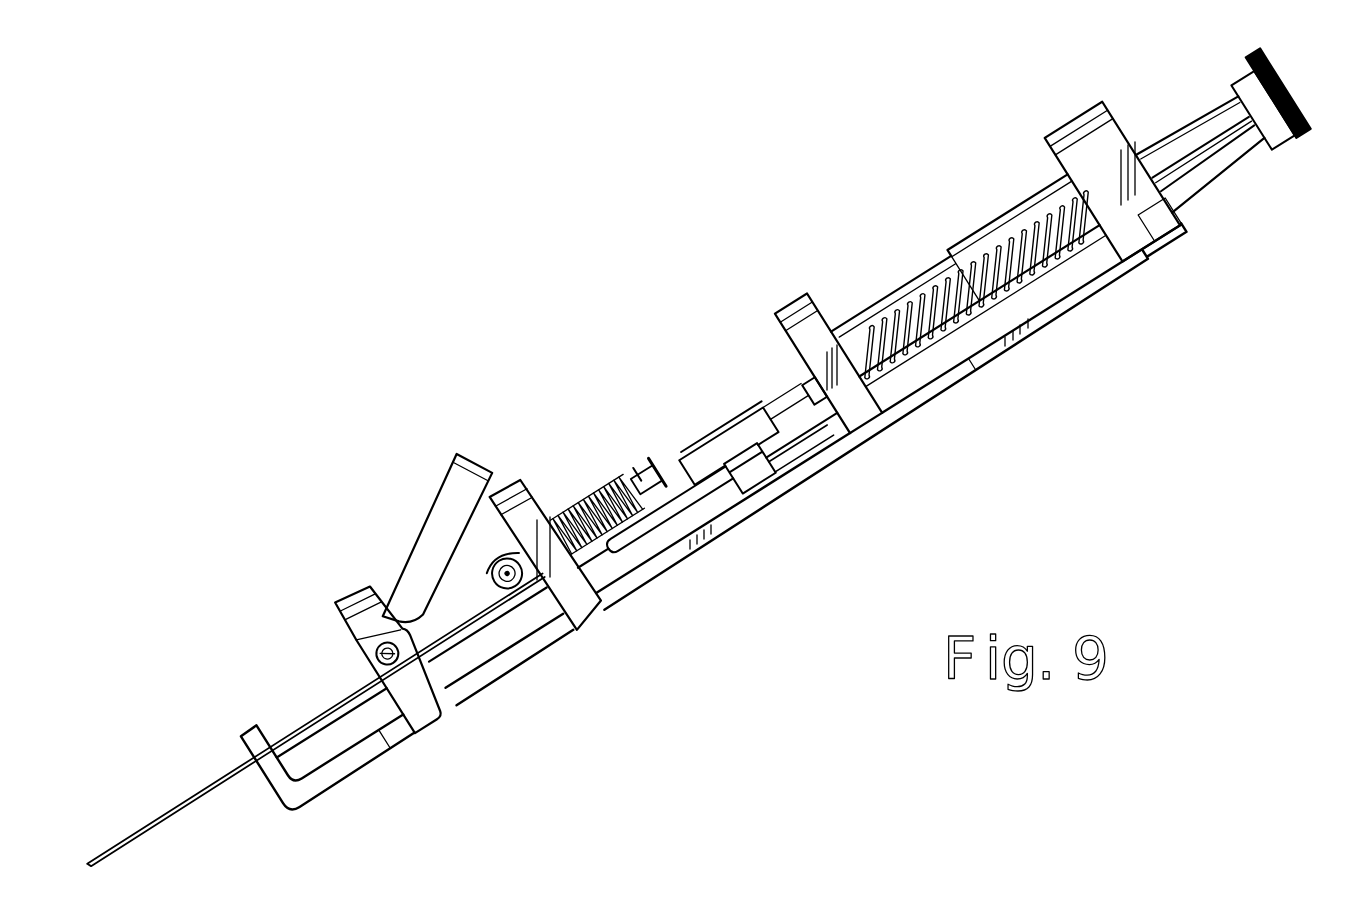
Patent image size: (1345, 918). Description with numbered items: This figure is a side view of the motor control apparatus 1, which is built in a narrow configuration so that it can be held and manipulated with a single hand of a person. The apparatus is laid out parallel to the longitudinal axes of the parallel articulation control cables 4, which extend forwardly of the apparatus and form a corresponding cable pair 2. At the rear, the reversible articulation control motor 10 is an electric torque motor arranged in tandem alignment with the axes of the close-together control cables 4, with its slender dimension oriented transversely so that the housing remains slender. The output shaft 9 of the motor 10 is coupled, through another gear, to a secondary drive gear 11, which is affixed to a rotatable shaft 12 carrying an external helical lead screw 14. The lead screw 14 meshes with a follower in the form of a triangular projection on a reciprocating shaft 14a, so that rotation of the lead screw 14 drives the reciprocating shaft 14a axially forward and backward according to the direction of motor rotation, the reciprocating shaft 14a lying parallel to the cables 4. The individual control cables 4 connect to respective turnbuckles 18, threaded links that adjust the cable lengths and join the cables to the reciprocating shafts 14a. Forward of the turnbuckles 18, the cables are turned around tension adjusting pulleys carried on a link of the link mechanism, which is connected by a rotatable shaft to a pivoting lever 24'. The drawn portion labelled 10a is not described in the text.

The motor control apparatus 1 is at (620, 440).
The cable pair 2 is at (117, 838).
The articulation control cable 4 is at (590, 567).
The output shaft 9 is at (1160, 152).
The articulation control motor 10 is at (978, 250).
The barrel section 10a is at (901, 300).
The secondary drive gear 11 is at (1252, 70).
The rotatable shaft 12 is at (1187, 168).
The helical lead screw 14 is at (886, 332).
The reciprocating shaft 14a is at (790, 458).
The turnbuckle 18 is at (750, 468).
The pivoting lever 24' is at (383, 531).